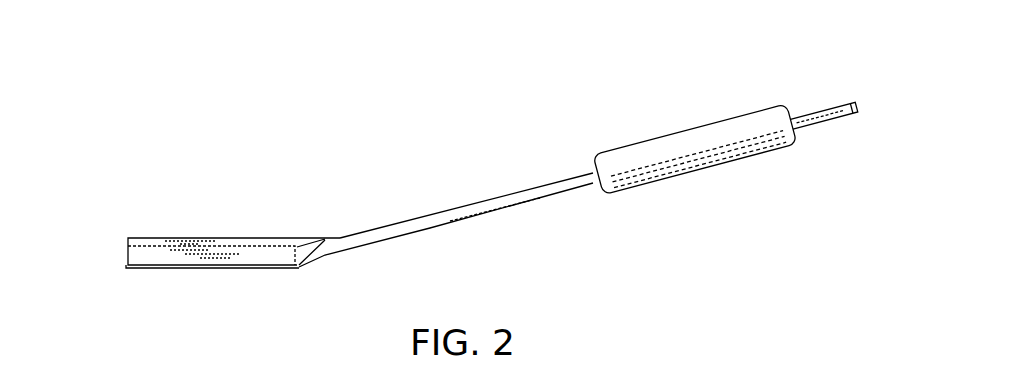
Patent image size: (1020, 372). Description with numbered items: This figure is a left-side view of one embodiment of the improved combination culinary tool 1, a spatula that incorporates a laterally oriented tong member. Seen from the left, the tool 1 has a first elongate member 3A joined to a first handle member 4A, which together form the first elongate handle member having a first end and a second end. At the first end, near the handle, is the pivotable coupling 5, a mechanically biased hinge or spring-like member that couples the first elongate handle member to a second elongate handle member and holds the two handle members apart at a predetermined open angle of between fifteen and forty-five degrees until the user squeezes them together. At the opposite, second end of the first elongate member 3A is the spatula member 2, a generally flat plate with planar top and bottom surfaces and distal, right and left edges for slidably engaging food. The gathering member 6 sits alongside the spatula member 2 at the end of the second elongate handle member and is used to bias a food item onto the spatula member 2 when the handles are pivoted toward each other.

The improved combination culinary tool 1 is at (185, 162).
The spatula member 2 is at (143, 268).
The first elongate member 3A is at (428, 215).
The first handle member 4A is at (702, 131).
The pivotable coupling 5 is at (848, 101).
The gathering member 6 is at (235, 237).